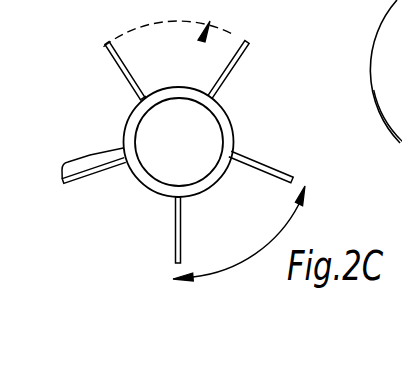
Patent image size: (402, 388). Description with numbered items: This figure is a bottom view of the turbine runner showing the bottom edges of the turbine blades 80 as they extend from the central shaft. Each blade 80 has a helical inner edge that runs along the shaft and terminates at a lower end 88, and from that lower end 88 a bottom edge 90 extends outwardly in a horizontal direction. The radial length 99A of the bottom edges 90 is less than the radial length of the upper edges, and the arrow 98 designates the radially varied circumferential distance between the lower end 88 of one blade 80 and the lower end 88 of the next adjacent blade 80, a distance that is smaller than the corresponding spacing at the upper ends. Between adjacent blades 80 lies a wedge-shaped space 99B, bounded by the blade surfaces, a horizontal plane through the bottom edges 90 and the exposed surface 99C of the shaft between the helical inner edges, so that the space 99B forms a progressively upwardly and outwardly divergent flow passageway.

The turbine blade 80 is at (119, 73).
The lower end of inner edge 88 is at (141, 100).
The bottom edge 90 is at (119, 58).
The arrow 98 is at (234, 265).
The radial length of bottom edges 99A is at (90, 154).
The wedge-shaped space 99B is at (216, 26).
The exposed surface of shaft 99C is at (223, 107).